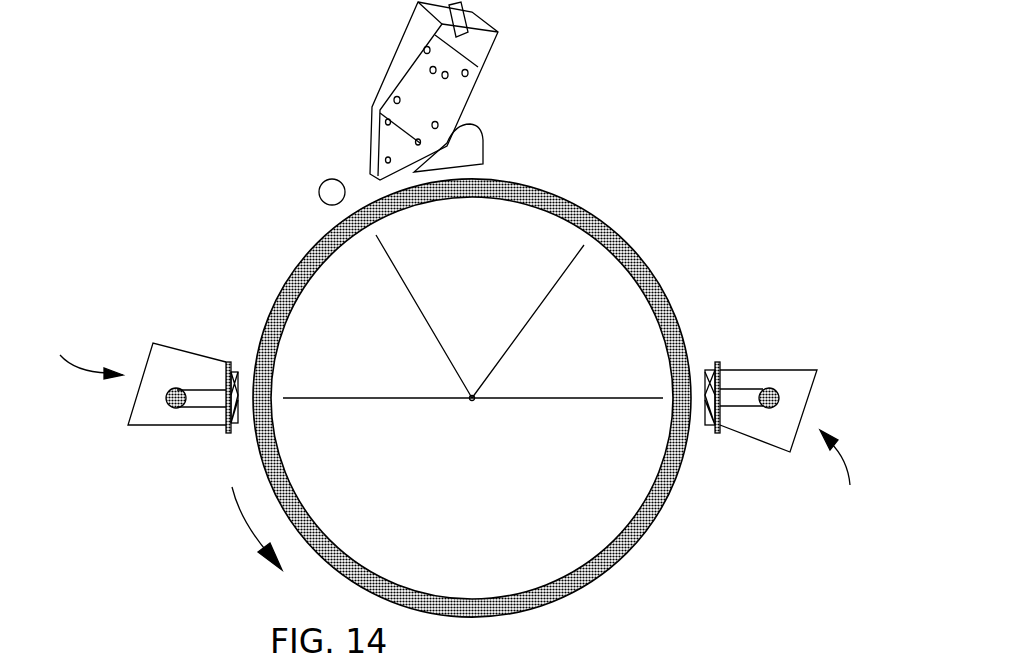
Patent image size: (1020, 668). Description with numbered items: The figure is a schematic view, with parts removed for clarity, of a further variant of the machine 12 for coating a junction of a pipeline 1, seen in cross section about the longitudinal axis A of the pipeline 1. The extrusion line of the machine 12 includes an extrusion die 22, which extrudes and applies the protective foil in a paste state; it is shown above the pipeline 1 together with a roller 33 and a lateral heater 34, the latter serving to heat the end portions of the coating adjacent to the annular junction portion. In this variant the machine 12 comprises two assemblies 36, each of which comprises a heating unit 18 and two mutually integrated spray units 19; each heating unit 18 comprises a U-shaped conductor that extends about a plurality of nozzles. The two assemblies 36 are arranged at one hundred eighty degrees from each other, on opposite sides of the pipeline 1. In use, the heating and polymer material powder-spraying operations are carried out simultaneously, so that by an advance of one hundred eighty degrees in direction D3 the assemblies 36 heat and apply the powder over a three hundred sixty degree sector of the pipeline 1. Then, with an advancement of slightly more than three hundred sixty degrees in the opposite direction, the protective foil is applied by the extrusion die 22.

The pipeline 1 is at (710, 582).
The machine 12 is at (668, 137).
The longitudinal axis A is at (470, 404).
The heating unit 18 is at (230, 364).
The spray unit 19 is at (165, 420).
The extrusion die 22 is at (475, 40).
The roller 33 is at (333, 180).
The lateral heater 34 is at (500, 128).
The assembly 36 is at (447, 428).
The direction D3 is at (244, 513).